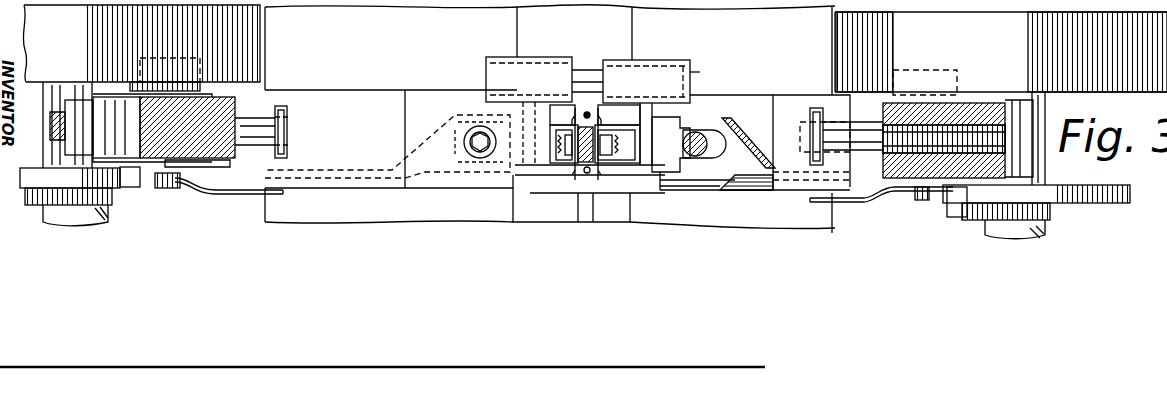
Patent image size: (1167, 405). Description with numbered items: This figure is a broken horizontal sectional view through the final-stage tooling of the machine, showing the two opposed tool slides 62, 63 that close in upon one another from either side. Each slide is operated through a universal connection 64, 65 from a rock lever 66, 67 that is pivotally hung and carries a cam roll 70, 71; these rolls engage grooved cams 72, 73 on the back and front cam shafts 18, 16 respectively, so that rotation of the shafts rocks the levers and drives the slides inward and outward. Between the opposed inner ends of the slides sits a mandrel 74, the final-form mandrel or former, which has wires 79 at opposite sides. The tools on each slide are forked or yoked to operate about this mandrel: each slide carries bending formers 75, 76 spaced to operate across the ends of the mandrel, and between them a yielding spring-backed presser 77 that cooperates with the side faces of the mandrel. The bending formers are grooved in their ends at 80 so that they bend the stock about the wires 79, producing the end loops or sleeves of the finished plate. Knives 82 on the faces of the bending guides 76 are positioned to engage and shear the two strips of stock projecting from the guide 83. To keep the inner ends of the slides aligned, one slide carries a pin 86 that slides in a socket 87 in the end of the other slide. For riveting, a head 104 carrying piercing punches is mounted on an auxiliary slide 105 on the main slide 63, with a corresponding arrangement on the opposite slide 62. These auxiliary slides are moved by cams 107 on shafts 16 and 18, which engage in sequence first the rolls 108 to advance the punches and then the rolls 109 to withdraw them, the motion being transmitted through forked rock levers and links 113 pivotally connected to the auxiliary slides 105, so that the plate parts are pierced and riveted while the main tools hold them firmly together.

The front cam shaft 16 is at (1046, 233).
The back cam shaft 18 is at (45, 222).
The tool slide 62 is at (372, 96).
The tool slide 63 is at (780, 100).
The universal connection 64 is at (287, 106).
The universal connection 65 is at (815, 108).
The rock lever 66 is at (226, 158).
The rock lever 67 is at (963, 110).
The cam roll 70 is at (170, 62).
The cam roll 71 is at (932, 76).
The grooved cam 72 is at (141, 43).
The grooved cam 73 is at (1001, 52).
The mandrel 74 is at (600, 152).
The bending former 75 is at (558, 112).
The bending former 76 is at (630, 182).
The spring-backed presser 77 is at (556, 137).
The mandrel wire 79 is at (592, 107).
The groove 80 is at (603, 118).
The knife 82 is at (555, 175).
The guide 83 is at (585, 175).
The pin 86 is at (588, 70).
The socket 87 is at (672, 68).
The head 104 is at (695, 130).
The auxiliary slide 105 is at (753, 176).
The cam 107 is at (50, 176).
The roll 108 is at (132, 190).
The roll 109 is at (167, 190).
The link 113 is at (230, 195).